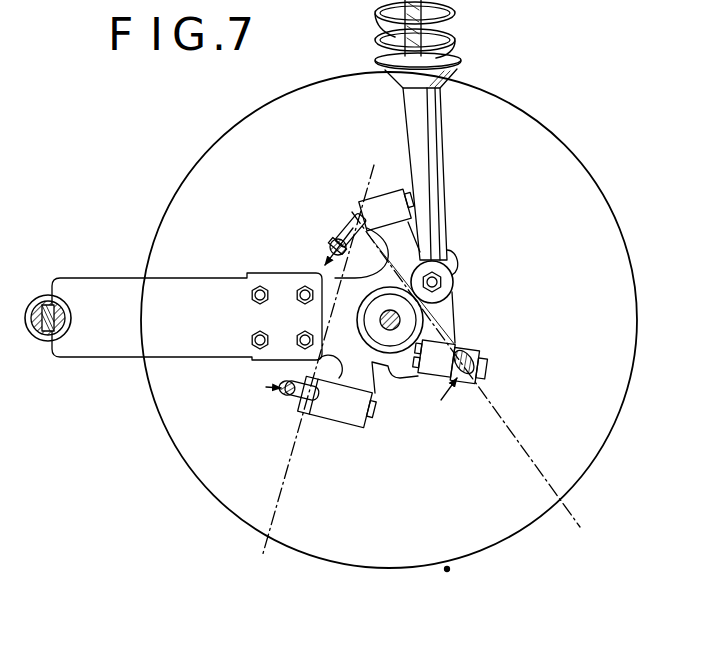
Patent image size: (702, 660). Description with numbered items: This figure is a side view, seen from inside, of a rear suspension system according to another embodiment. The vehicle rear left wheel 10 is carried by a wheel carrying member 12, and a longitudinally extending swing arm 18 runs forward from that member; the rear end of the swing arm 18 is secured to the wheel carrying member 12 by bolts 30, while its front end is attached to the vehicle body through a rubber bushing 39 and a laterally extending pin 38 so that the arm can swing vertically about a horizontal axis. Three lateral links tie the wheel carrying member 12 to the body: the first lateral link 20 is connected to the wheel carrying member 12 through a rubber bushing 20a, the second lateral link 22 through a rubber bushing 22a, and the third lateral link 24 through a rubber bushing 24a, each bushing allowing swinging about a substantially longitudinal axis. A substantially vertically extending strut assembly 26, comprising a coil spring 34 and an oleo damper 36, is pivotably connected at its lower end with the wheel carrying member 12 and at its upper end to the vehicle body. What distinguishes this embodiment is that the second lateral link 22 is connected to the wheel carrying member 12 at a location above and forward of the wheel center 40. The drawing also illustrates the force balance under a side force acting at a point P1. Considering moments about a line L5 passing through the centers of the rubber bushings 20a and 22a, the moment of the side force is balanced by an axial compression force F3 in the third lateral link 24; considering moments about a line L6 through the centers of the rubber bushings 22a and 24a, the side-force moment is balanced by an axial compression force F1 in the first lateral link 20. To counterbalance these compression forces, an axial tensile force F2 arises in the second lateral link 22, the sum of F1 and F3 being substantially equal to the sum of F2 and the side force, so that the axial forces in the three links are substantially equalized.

The vehicle rear left wheel 10 is at (560, 167).
The wheel carrying member 12 is at (372, 363).
The swing arm 18 is at (190, 293).
The first lateral link 20 is at (305, 405).
The rubber bushing 20a is at (310, 407).
The second lateral link 22 is at (330, 244).
The rubber bushing 22a is at (348, 213).
The third lateral link 24 is at (463, 346).
The rubber bushing 24a is at (487, 358).
The strut assembly 26 is at (447, 153).
The bolts 30 is at (255, 339).
The coil spring 34 is at (455, 15).
The oleo damper 36 is at (428, 187).
The laterally extending pin 38 is at (70, 312).
The rubber bushing 39 is at (46, 340).
The wheel center 40 is at (400, 320).
The axial compression force F1 is at (260, 388).
The axial tensile force F2 is at (324, 251).
The axial compression force F3 is at (443, 406).
The line L5 is at (288, 477).
The line L6 is at (536, 424).
The point P1 is at (446, 568).